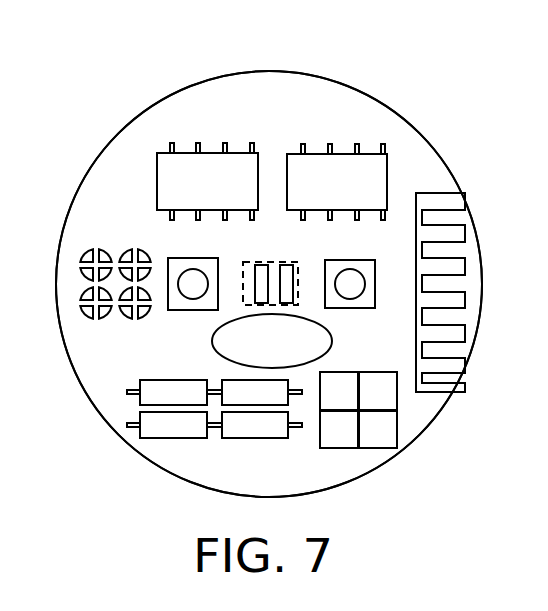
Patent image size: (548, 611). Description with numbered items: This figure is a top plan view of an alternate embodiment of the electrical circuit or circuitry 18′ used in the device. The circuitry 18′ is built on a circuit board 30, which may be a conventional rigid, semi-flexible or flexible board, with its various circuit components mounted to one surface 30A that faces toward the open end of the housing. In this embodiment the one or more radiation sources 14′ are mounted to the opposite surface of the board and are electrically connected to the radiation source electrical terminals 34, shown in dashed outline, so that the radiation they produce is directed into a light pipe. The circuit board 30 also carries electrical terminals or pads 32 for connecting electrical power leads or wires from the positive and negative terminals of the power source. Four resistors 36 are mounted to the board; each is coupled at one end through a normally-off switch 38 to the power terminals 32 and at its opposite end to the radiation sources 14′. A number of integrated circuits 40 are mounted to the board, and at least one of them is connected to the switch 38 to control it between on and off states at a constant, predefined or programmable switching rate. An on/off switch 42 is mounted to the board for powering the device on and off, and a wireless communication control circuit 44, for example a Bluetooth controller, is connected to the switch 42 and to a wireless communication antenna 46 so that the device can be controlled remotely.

The electrical circuit or circuitry 18′ is at (397, 88).
The circuit board 30 is at (108, 423).
The surface of the circuit board 30A is at (226, 105).
The radiation source 14′ is at (240, 260).
The integrated circuits 40 is at (273, 145).
The radiation source electrical terminals 34 is at (302, 261).
The wireless communication antenna 46 is at (467, 233).
The electrical terminals or pads 32 is at (114, 246).
The normally-off switch 38 is at (190, 310).
The on/off switch 42 is at (375, 283).
The wireless communication control circuit 44 is at (370, 448).
The resistors 36 is at (192, 448).